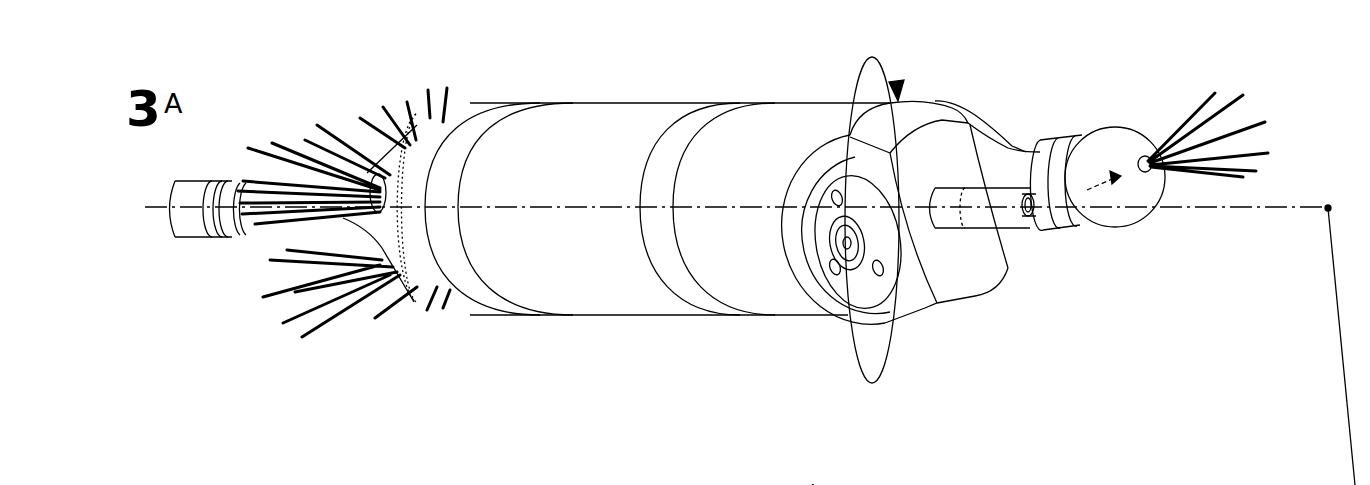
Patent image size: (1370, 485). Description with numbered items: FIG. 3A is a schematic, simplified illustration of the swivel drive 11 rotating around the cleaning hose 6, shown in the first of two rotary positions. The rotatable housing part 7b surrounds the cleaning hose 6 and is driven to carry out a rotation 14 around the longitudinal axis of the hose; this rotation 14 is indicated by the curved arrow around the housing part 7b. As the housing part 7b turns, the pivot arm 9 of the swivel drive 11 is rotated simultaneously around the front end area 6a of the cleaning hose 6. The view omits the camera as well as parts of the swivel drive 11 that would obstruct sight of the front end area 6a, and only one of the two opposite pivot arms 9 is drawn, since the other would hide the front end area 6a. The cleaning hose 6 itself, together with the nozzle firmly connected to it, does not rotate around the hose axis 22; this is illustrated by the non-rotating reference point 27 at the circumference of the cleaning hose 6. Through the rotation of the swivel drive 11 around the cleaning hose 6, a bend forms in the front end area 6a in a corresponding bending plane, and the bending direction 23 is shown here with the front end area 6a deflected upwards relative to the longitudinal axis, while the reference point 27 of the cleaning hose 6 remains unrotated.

The cleaning hose 6 is at (327, 222).
The front end area of cleaning hose 6a is at (1001, 196).
The rotatable housing part 7b is at (833, 242).
The pivot arm 9 is at (992, 137).
The swivel drive 11 is at (1007, 145).
The rotation 14 is at (908, 484).
The hose axis 22 is at (1087, 190).
The bending direction 23 is at (1125, 171).
The reference point 27 is at (973, 190).